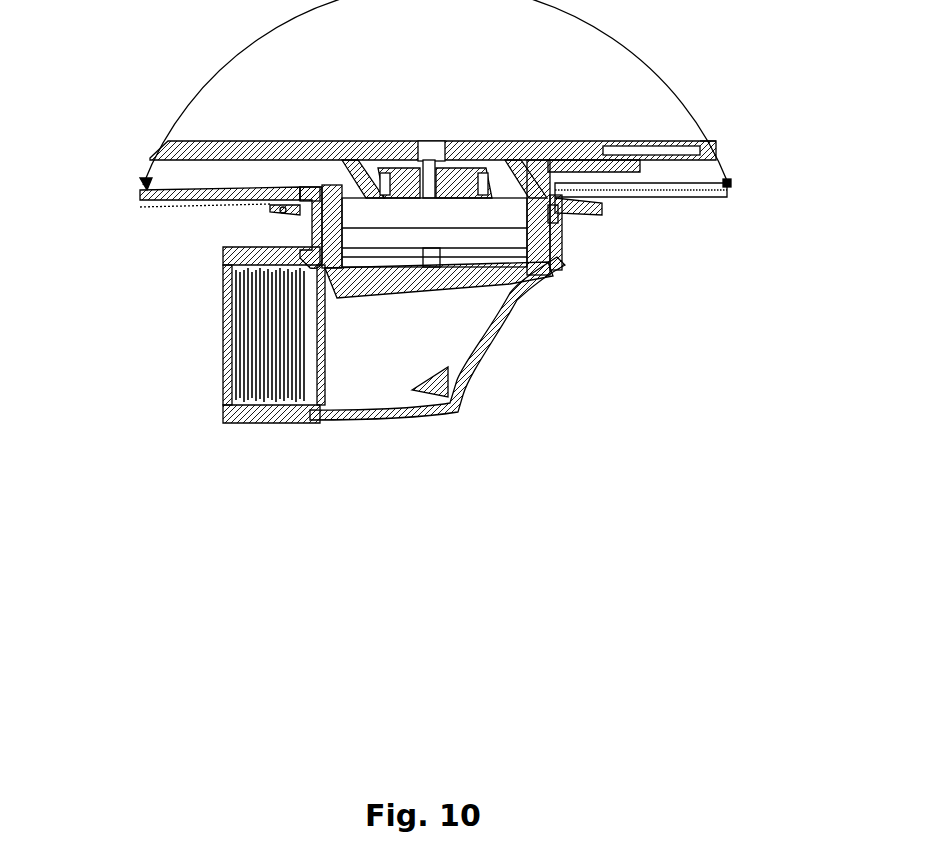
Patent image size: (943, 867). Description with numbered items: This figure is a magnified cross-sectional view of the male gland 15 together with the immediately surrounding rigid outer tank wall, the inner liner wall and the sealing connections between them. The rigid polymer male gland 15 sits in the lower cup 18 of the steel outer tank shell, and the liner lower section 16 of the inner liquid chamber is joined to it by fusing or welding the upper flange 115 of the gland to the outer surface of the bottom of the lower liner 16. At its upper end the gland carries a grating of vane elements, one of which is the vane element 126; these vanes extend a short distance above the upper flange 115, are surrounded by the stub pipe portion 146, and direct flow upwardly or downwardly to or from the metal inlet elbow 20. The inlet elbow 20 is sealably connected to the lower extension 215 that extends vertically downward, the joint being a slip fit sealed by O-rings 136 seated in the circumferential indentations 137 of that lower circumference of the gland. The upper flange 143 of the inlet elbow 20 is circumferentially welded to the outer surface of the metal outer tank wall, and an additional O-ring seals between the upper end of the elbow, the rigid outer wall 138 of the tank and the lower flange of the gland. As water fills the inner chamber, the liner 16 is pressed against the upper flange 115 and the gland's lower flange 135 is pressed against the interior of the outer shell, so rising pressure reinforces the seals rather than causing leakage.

The male gland 15 is at (372, 138).
The liner lower section 16 is at (642, 153).
The lower cup 18 is at (280, 204).
The inlet elbow 20 is at (493, 343).
The upper flange 115 is at (580, 168).
The vane element 126 is at (442, 141).
The lower flange 135 is at (300, 198).
The O-rings 136 is at (300, 200).
The circumferential indentations 137 is at (404, 167).
The rigid outer wall 138 is at (598, 208).
The upper flange of the inlet elbow 143 is at (281, 212).
The stub pipe portion 146 is at (562, 146).
The lower extension 215 is at (541, 256).